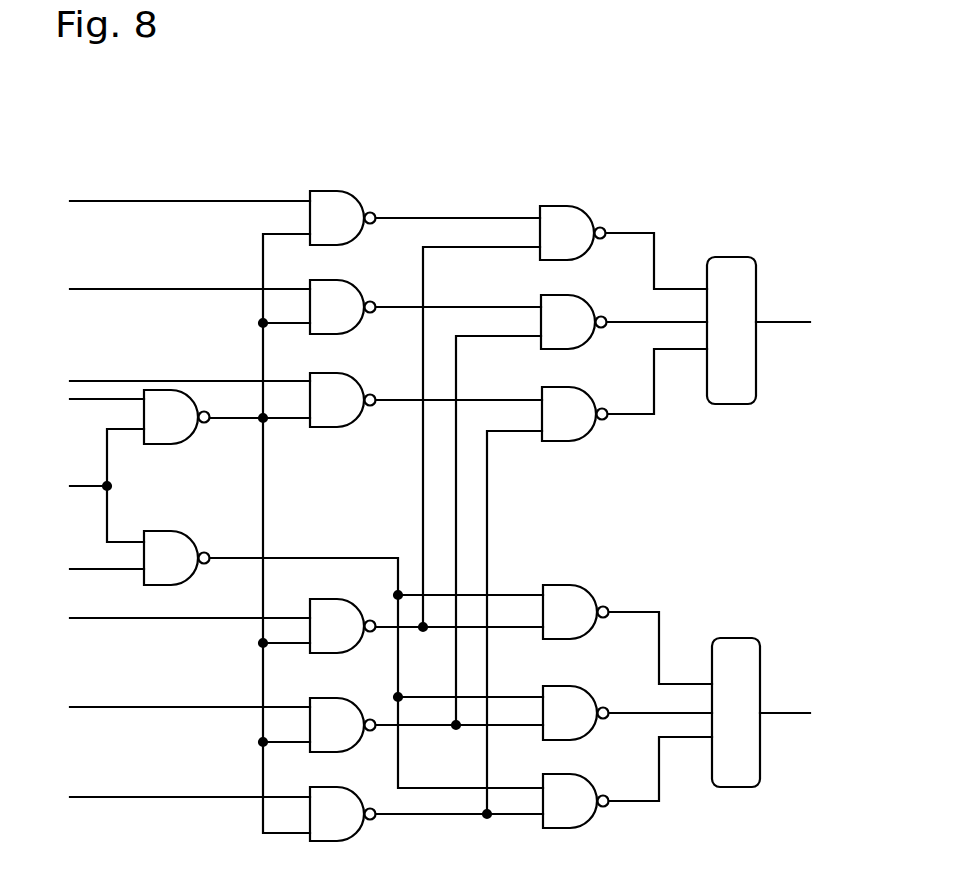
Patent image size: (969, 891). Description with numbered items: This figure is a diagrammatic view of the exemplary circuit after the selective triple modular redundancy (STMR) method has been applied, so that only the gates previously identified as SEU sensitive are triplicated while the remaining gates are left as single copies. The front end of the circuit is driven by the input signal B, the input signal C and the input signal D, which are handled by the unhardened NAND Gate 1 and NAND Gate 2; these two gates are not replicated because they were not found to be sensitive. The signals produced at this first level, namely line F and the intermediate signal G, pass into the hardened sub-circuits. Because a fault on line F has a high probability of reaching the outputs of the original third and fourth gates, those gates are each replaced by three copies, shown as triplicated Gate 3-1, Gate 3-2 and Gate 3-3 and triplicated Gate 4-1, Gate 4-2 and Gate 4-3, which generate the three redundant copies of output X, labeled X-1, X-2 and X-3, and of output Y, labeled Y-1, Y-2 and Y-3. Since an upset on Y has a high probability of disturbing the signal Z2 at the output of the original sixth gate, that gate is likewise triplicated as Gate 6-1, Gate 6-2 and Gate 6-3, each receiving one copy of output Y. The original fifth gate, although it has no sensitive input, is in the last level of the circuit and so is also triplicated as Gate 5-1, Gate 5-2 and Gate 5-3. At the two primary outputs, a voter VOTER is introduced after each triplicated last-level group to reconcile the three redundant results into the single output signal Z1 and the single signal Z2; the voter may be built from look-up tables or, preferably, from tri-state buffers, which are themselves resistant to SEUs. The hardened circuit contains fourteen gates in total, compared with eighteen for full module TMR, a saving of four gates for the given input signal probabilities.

The NAND gate 1 Gate 1 is at (177, 430).
The NAND gate 2 Gate 2 is at (177, 569).
The triplicated Gate 3 Gate 3-1 is at (345, 206).
The triplicated Gate 3 Gate 3-2 is at (345, 295).
The triplicated Gate 3 Gate 3-3 is at (345, 389).
The triplicated Gate 4 Gate 4-1 is at (347, 639).
The triplicated Gate 4 Gate 4-2 is at (348, 737).
The triplicated Gate 4 Gate 4-3 is at (347, 826).
The triplicated Gate 5 Gate 5-1 is at (577, 222).
The triplicated Gate 5 Gate 5-2 is at (578, 310).
The triplicated Gate 5 Gate 5-3 is at (579, 404).
The triplicated Gate 6 Gate 6-1 is at (577, 601).
The triplicated Gate 6 Gate 6-2 is at (581, 703).
The triplicated Gate 6 Gate 6-3 is at (581, 792).
The voter VOTER is at (733, 522).
The input signal B is at (94, 400).
The input signal C is at (94, 485).
The input signal D is at (94, 570).
The line F is at (260, 533).
The intermediate signal G is at (376, 660).
The output X X-1 is at (458, 209).
The output X X-2 is at (458, 299).
The output X X-3 is at (459, 392).
The output Y Y-1 is at (459, 430).
The output Y Y-2 is at (459, 523).
The output Y Y-3 is at (459, 642).
The output signal Z1 is at (784, 311).
The signal Z2 is at (786, 695).